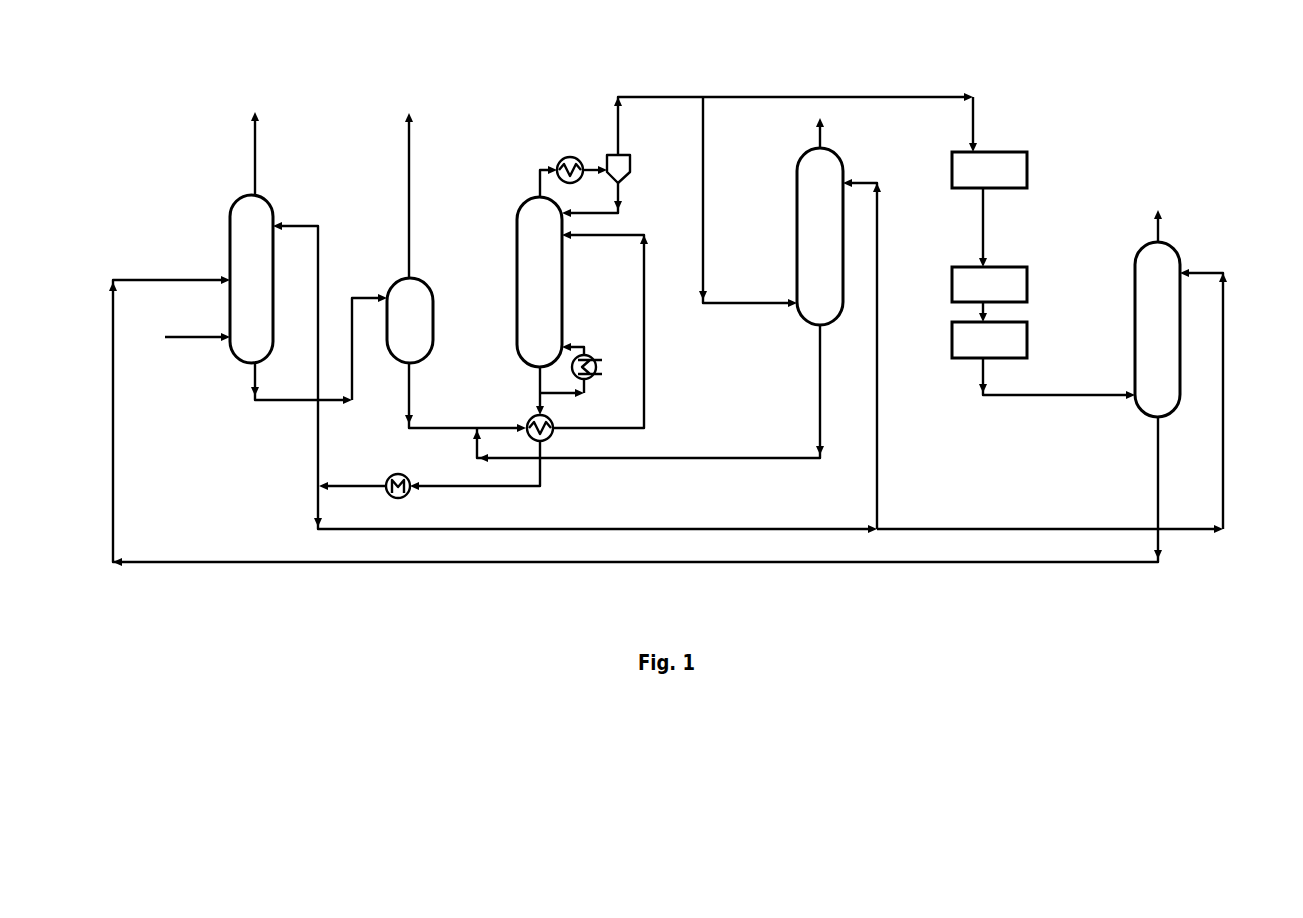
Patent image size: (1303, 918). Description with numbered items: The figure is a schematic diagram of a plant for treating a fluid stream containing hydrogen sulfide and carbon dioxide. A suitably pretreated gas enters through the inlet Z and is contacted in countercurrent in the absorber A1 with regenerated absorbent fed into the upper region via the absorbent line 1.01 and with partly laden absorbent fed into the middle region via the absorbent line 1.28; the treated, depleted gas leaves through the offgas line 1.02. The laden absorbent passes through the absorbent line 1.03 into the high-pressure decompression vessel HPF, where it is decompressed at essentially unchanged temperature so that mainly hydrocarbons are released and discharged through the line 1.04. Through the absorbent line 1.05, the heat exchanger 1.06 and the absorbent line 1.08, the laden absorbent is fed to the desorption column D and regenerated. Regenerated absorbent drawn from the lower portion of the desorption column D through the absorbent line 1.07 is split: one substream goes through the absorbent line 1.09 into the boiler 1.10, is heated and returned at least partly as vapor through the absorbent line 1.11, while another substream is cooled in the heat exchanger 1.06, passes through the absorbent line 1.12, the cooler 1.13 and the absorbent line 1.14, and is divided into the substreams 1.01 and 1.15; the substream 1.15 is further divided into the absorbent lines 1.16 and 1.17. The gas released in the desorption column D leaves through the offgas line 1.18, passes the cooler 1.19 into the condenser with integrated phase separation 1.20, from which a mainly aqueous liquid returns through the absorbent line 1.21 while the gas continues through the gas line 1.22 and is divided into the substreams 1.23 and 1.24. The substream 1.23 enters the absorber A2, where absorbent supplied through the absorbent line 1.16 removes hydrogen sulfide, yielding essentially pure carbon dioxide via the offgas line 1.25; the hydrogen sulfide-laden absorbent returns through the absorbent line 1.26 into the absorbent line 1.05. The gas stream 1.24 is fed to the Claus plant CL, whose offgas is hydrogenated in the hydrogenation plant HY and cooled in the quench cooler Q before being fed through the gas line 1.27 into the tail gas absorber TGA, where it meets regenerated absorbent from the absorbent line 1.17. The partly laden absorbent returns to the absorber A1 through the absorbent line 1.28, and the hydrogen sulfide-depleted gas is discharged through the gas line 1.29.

The absorber A1 is at (232, 358).
The high-pressure decompression vessel HPF is at (431, 277).
The desorption column D is at (517, 280).
The absorber A2 is at (797, 238).
The tail gas absorber TGA is at (1135, 245).
The Claus plant CL is at (1000, 152).
The hydrogenation plant HY is at (1002, 266).
The quench cooler Q is at (1028, 340).
The inlet Z is at (190, 336).
The absorbent line 1.01 is at (301, 224).
The offgas line 1.02 is at (253, 146).
The absorbent line 1.03 is at (258, 402).
The line 1.04 is at (409, 146).
The absorbent line 1.05 is at (414, 385).
The heat exchanger 1.06 is at (553, 438).
The absorbent line 1.07 is at (538, 388).
The absorbent line 1.08 is at (645, 364).
The absorbent line 1.09 is at (586, 393).
The boiler 1.10 is at (591, 355).
The absorbent line 1.11 is at (578, 343).
The absorbent line 1.12 is at (520, 485).
The cooler 1.13 is at (405, 474).
The absorbent line 1.14 is at (357, 484).
The substream 1.15 is at (460, 530).
The absorbent line 1.16 is at (879, 418).
The absorbent line 1.17 is at (971, 527).
The offgas line 1.18 is at (544, 169).
The cooler 1.19 is at (569, 156).
The condenser with integrated phase separation 1.20 is at (630, 165).
The absorbent line 1.21 is at (625, 196).
The gas line 1.22 is at (640, 97).
The substream 1.23 is at (706, 187).
The gas stream 1.24 is at (920, 97).
The offgas line 1.25 is at (822, 132).
The absorbent line 1.26 is at (756, 458).
The gas line 1.27 is at (1068, 395).
The absorbent line 1.28 is at (510, 562).
The gas line 1.29 is at (1163, 230).